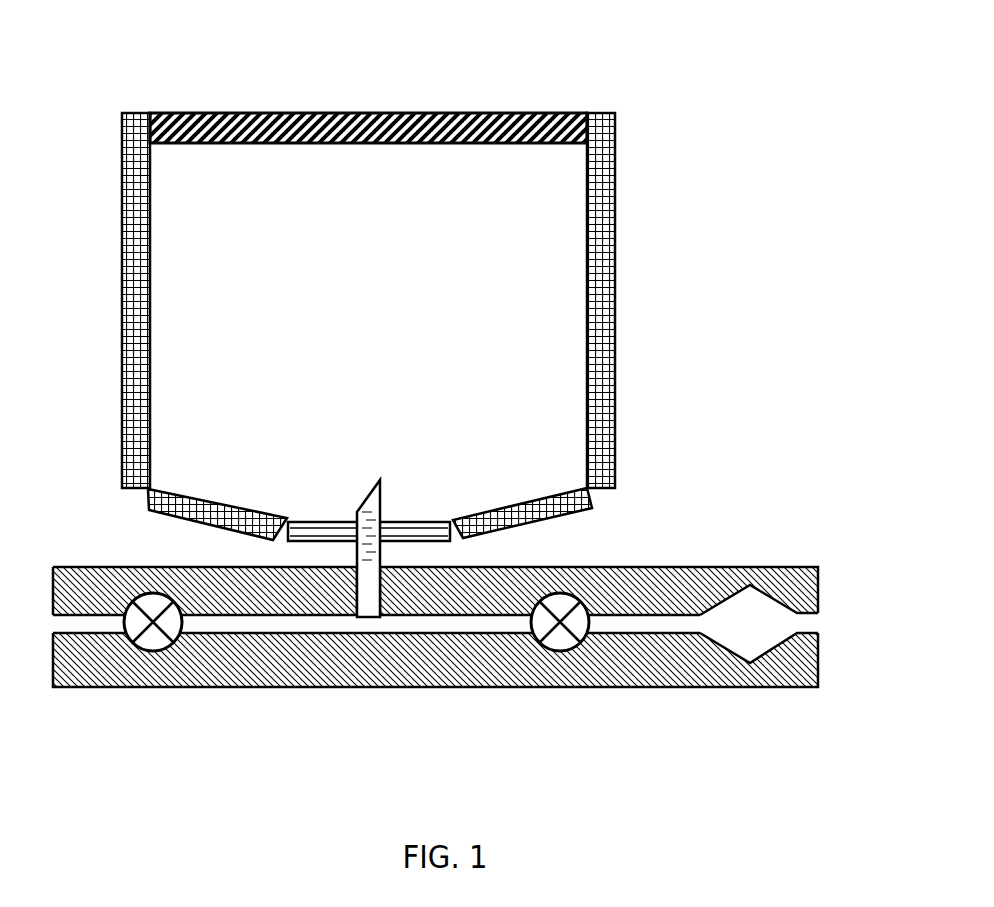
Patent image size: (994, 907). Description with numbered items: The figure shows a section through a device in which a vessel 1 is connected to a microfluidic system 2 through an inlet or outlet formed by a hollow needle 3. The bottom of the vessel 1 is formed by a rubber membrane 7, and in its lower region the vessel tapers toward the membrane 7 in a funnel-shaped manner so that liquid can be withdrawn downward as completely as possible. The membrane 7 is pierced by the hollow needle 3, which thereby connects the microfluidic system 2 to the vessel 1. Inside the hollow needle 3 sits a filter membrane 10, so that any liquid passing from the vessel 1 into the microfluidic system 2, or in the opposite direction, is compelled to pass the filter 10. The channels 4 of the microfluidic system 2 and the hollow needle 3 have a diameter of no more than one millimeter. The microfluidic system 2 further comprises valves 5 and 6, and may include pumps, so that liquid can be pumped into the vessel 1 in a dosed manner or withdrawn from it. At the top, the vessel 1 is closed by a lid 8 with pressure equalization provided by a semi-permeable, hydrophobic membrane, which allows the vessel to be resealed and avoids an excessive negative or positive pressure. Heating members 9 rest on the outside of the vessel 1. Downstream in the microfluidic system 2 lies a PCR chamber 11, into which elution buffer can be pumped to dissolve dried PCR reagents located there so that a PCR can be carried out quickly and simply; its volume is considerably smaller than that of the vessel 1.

The vessel 1 is at (426, 274).
The microfluidic system 2 is at (435, 614).
The hollow needle 3 is at (320, 575).
The channels 4 is at (628, 633).
The valve 5 is at (146, 645).
The valve 6 is at (558, 637).
The rubber membrane 7 is at (393, 528).
The lid 8 is at (537, 112).
The heating members 9 is at (598, 378).
The filter membrane 10 is at (372, 553).
The PCR chamber 11 is at (765, 638).